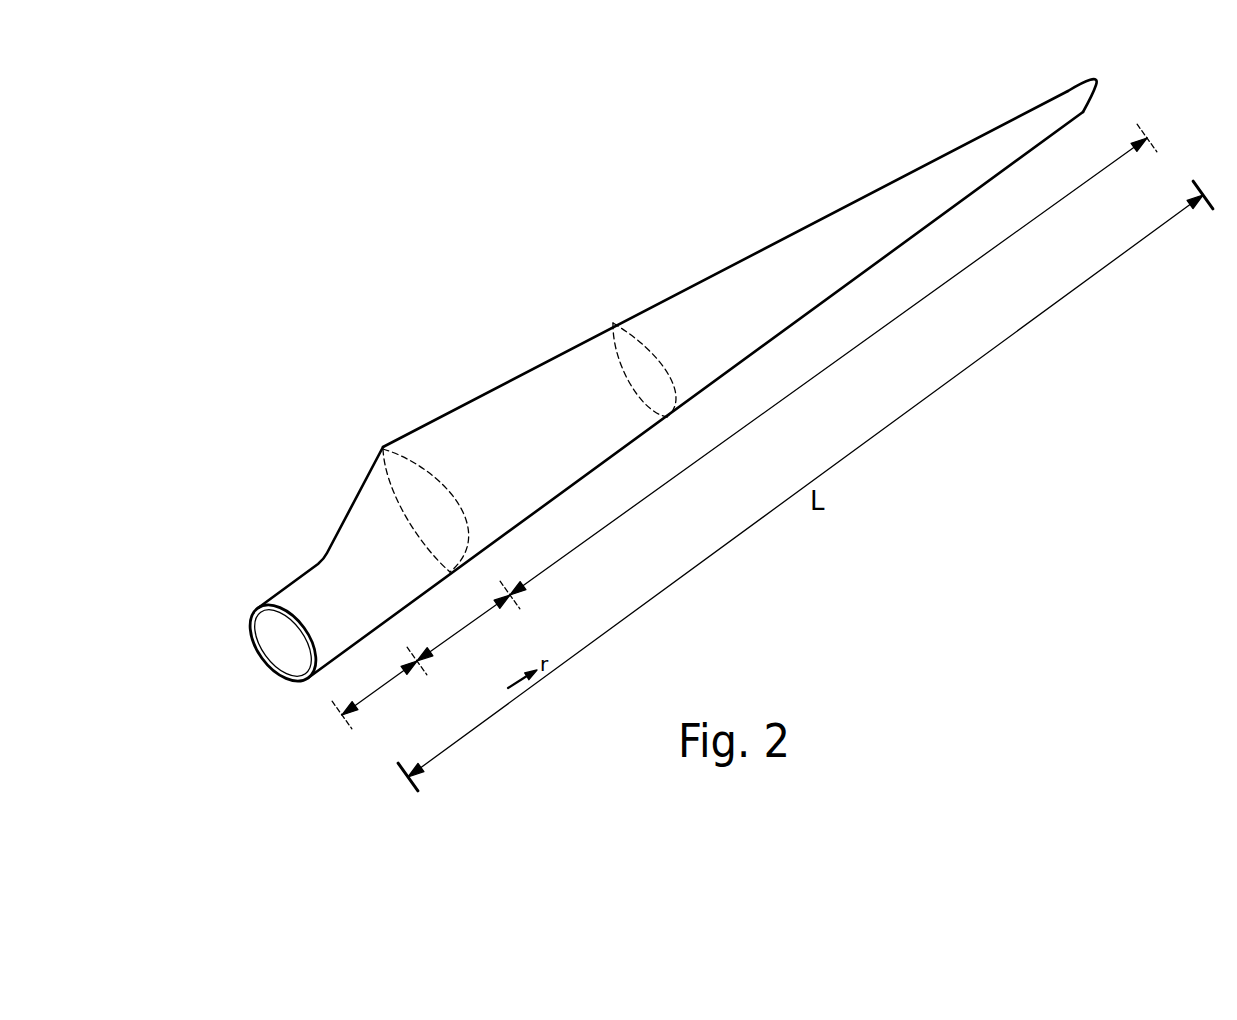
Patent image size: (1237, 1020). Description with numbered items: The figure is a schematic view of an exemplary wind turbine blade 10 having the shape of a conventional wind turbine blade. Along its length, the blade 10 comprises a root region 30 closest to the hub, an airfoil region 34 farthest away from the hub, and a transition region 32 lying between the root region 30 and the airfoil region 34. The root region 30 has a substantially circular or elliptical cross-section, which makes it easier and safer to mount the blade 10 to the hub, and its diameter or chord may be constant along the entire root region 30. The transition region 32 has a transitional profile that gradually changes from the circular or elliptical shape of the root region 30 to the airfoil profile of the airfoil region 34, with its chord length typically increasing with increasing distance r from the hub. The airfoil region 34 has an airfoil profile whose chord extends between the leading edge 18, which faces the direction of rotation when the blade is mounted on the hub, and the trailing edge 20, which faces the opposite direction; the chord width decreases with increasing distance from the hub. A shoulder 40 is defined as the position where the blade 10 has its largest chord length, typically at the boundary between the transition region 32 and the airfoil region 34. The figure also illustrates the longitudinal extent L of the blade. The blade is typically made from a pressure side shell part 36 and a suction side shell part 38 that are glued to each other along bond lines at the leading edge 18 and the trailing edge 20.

The wind turbine blade 10 is at (575, 276).
The leading edge 18 is at (887, 257).
The trailing edge 20 is at (708, 276).
The root region 30 is at (379, 690).
The transition region 32 is at (463, 630).
The airfoil region 34 is at (830, 367).
The pressure side shell part 36 is at (272, 603).
The suction side shell part 38 is at (249, 626).
The shoulder 40 is at (384, 444).